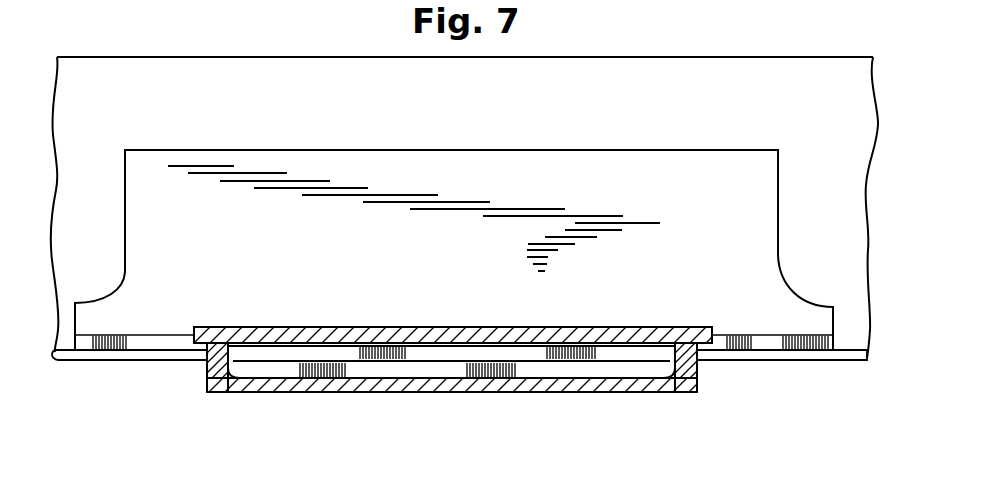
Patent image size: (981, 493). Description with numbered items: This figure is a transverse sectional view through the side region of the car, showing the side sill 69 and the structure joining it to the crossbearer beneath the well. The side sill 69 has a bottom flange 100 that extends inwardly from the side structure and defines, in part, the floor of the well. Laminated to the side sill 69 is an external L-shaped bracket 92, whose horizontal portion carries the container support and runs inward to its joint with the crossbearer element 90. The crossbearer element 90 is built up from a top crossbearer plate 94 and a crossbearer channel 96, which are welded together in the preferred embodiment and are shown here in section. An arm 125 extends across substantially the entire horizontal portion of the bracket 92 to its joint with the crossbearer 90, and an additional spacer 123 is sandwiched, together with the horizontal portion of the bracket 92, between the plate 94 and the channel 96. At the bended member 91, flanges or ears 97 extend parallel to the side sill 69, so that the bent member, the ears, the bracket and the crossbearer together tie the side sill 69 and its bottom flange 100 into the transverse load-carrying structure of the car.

The side sill 69 is at (847, 213).
The bended member 91 is at (760, 193).
The flanges or ears 97 is at (140, 322).
The bottom flange 100 is at (852, 362).
The crossbearer channel 96 is at (227, 385).
The spacer 123 is at (640, 352).
The external L-shaped bracket 92 is at (557, 375).
The crossbearer element 90 is at (430, 337).
The top crossbearer plate 94 is at (280, 340).
The arm 125 is at (757, 350).